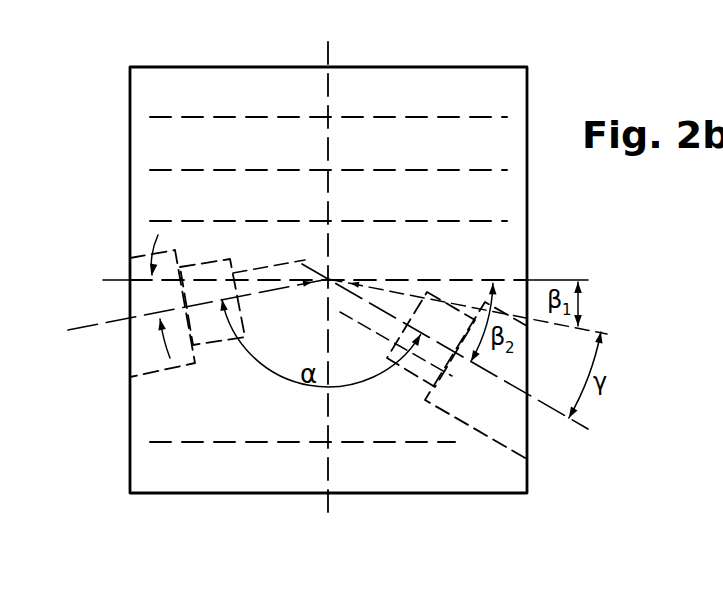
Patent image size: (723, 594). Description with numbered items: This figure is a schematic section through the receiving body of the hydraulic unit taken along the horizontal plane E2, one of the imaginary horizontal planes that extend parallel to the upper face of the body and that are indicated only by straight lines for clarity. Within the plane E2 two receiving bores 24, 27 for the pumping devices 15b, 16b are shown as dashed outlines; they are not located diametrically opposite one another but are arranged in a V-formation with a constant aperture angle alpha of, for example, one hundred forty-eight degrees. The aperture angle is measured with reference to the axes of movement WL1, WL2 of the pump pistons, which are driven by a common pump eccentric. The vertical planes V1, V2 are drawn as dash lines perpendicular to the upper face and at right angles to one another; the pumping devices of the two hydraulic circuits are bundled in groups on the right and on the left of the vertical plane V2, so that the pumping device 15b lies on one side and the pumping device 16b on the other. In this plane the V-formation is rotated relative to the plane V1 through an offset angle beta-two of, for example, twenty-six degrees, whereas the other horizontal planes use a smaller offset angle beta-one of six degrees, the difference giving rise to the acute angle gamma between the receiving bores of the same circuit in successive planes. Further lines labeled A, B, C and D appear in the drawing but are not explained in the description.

The pumping device 15b is at (142, 388).
The pumping device 16b is at (504, 468).
The receiving bore 24 is at (172, 370).
The receiving bore 27 is at (485, 437).
The plane A is at (191, 117).
The plane B is at (191, 170).
The plane C is at (191, 221).
The plane D is at (233, 443).
The vertical plane V1 is at (347, 283).
The vertical plane V2 is at (329, 282).
The axis of movement WL1 is at (173, 300).
The axis of movement WL2 is at (472, 356).
The horizontal plane E2 is at (513, 103).